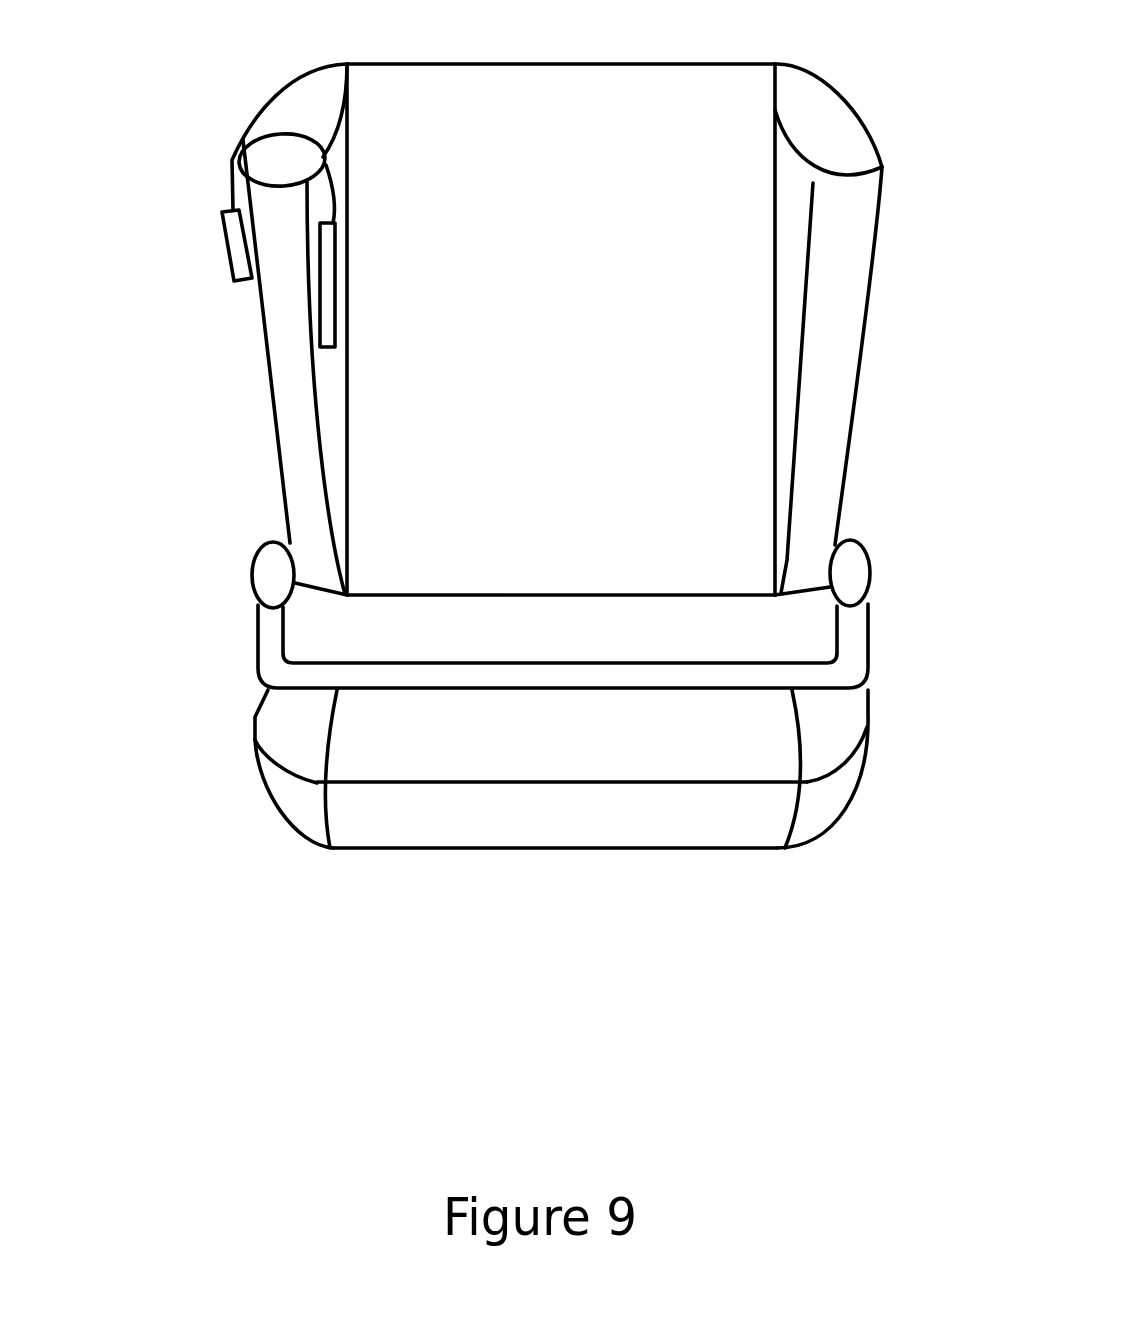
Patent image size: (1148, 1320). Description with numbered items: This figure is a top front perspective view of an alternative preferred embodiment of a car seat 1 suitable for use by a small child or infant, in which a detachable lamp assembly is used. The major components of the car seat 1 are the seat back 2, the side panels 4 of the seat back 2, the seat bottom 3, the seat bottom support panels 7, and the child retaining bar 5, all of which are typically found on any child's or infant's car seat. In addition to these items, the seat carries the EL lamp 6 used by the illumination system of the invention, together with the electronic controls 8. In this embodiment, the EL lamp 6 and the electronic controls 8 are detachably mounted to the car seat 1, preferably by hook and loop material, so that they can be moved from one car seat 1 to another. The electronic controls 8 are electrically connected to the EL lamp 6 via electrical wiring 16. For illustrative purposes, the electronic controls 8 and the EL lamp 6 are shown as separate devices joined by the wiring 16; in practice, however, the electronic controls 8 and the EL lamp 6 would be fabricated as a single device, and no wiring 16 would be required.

The car seat 1 is at (200, 979).
The seat back 2 is at (512, 108).
The seat bottom 3 is at (623, 742).
The side panels 4 is at (285, 288).
The child retaining bar 5 is at (255, 642).
The EL lamp 6 is at (338, 270).
The seat bottom support panels 7 is at (283, 735).
The electronic controls 8 is at (225, 240).
The electrical wiring 16 is at (232, 160).